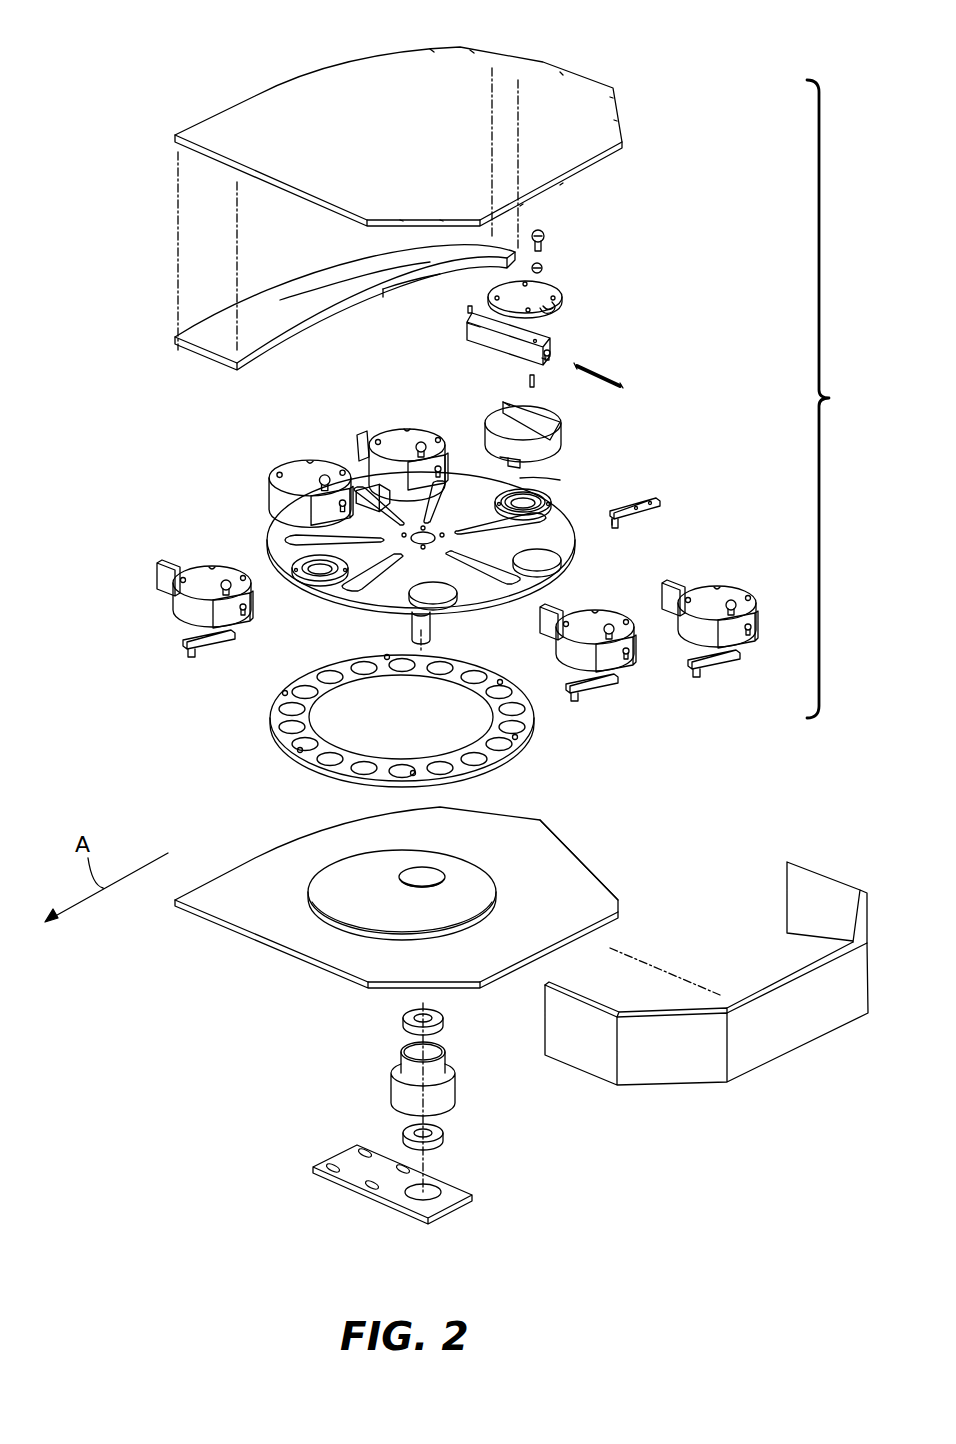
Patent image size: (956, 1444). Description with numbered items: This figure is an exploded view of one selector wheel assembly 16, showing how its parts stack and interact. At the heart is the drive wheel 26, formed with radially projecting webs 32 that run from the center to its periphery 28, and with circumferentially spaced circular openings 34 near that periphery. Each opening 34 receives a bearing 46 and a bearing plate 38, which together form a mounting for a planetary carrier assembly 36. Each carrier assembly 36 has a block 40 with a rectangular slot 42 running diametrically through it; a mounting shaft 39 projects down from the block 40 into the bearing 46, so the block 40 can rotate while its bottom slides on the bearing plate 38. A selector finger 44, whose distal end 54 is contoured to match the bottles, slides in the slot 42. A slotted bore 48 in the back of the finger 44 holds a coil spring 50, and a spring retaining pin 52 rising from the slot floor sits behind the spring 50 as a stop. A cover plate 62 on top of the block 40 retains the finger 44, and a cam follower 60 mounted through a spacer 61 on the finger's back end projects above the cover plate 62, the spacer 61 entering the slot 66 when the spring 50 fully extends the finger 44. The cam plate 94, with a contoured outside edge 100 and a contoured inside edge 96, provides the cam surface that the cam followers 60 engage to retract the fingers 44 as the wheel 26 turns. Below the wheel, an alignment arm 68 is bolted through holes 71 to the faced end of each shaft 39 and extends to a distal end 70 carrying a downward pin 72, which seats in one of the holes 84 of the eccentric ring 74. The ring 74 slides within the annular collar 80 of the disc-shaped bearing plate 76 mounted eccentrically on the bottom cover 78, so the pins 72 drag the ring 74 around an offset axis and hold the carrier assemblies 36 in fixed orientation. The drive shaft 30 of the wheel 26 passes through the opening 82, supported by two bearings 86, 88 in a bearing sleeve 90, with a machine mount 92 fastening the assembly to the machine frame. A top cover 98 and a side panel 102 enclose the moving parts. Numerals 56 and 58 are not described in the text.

The selector wheel assembly 16 is at (835, 399).
The drive wheel 26 is at (540, 470).
The periphery 28 is at (452, 542).
The drive shaft 30 is at (410, 626).
The radially projecting webs 32 is at (420, 573).
The circular openings 34 is at (455, 605).
The planetary carrier assembly 36 is at (208, 568).
The bearing plate 38 is at (548, 503).
The mounting shaft 39 is at (495, 460).
The block 40 is at (560, 435).
The rectangular slot 42 is at (500, 402).
The selector finger 44 is at (520, 340).
The bearing 46 is at (540, 495).
The slotted bore 48 is at (552, 355).
The coil spring 50 is at (610, 375).
The spring retaining pin 52 is at (528, 380).
The distal end 54 is at (470, 328).
The pin 56 is at (470, 312).
The hole 58 is at (543, 362).
The cam follower 60 is at (538, 230).
The spacer 61 is at (542, 266).
The cover plate 62 is at (548, 283).
The slot 66 is at (560, 310).
The alignment arm 68 is at (190, 632).
The distal end 70 is at (612, 512).
The holes 71 is at (653, 507).
The pin 72 is at (190, 657).
The eccentric ring 74 is at (497, 770).
The bearing plate 76 is at (545, 913).
The bottom cover 78 is at (620, 878).
The annular collar 80 is at (305, 912).
The opening 82 is at (428, 868).
The holes 84 is at (283, 695).
The bearing 86 is at (445, 1020).
The bearing 88 is at (445, 1136).
The bearing sleeve 90 is at (460, 1082).
The machine mount 92 is at (460, 1205).
The cam plate 94 is at (210, 347).
The contoured inside edge 96 is at (403, 285).
The top cover 98 is at (492, 52).
The contoured outside edge 100 is at (288, 282).
The side panel 102 is at (808, 1040).